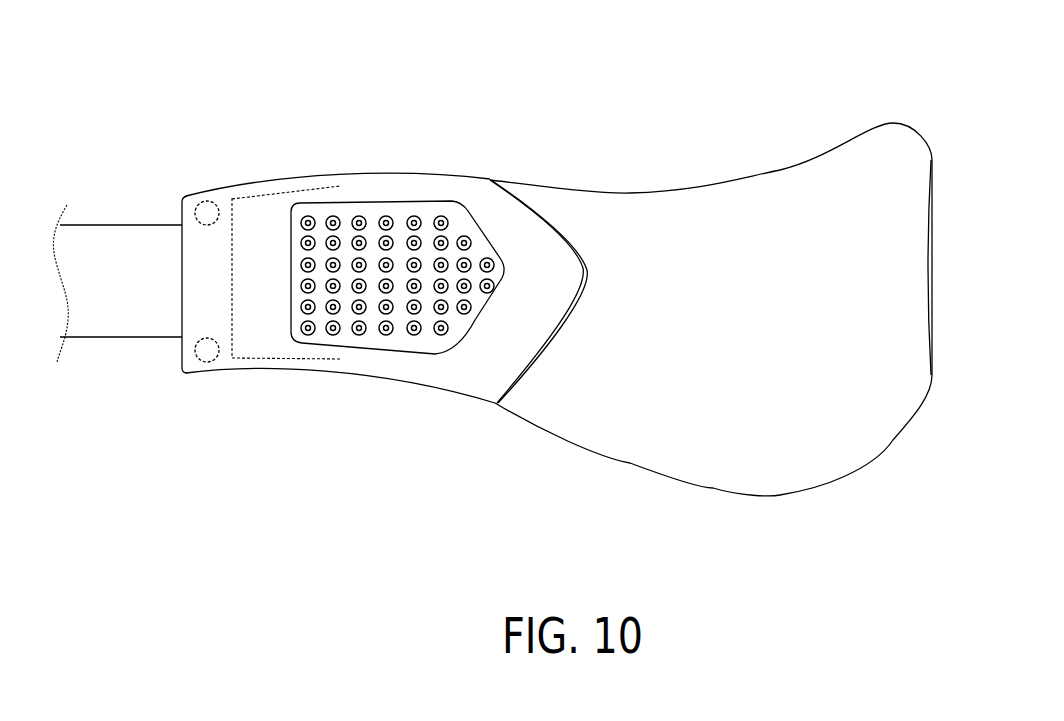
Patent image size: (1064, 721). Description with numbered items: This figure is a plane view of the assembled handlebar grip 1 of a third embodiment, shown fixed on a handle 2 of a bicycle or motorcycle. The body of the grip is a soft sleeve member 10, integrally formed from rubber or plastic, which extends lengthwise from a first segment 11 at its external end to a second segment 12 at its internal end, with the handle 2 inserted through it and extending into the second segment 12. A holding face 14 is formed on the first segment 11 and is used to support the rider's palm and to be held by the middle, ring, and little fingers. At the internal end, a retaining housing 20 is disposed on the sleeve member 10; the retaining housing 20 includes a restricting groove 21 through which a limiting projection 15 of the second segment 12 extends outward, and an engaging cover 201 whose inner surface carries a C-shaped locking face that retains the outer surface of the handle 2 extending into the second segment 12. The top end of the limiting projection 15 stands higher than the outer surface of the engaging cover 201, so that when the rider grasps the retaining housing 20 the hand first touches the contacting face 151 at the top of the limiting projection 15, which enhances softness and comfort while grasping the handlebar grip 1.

The handlebar grip 1 is at (571, 124).
The handle 2 is at (138, 223).
The sleeve member 10 is at (765, 278).
The first segment 11 is at (933, 258).
The second segment 12 is at (232, 308).
The holding face 14 is at (843, 192).
The limiting projection 15 is at (397, 276).
The contacting face 151 is at (400, 242).
The retaining housing 20 is at (384, 274).
The engaging cover 201 is at (460, 193).
The restricting groove 21 is at (392, 350).